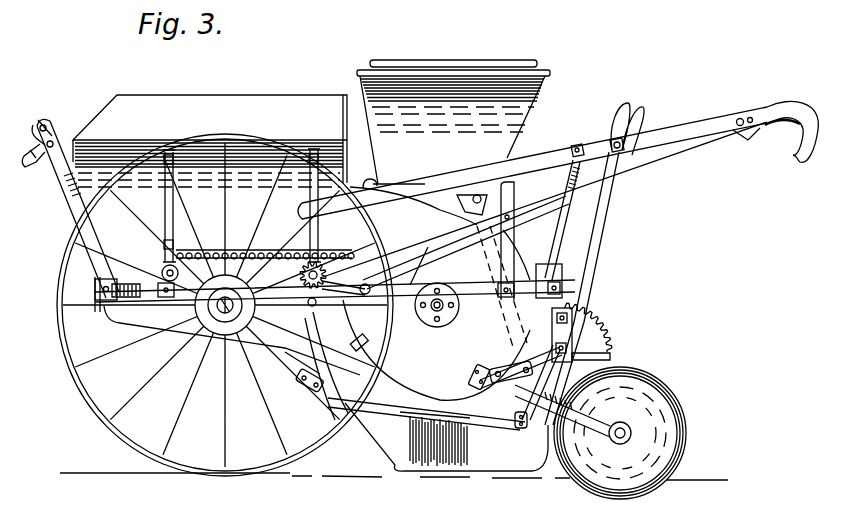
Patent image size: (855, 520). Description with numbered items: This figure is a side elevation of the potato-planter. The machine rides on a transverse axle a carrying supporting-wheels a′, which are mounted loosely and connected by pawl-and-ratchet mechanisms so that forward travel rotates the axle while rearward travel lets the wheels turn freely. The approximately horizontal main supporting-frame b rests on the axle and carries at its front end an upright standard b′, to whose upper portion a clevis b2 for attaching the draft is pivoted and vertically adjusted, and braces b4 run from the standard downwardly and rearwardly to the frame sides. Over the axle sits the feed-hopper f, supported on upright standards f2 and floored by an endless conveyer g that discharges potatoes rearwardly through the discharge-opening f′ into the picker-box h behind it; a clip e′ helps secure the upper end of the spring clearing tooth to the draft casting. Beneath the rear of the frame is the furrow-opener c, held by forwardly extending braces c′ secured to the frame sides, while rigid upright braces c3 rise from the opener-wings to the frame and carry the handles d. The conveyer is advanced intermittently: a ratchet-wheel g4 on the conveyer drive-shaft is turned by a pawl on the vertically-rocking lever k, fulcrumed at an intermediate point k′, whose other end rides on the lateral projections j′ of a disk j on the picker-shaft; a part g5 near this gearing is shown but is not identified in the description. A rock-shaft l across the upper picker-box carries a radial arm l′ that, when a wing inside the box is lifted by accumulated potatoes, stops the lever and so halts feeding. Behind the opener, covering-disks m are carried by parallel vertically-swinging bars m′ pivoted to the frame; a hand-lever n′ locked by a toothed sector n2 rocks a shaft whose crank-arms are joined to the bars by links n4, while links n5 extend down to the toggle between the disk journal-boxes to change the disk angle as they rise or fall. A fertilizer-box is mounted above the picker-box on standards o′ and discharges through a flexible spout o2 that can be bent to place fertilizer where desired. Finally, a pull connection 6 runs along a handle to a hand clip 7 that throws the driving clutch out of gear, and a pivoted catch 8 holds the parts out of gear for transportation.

The transverse axle a is at (206, 350).
The supporting-wheels a′ is at (92, 403).
The main supporting-frame b is at (477, 286).
The upright standard b′ is at (42, 121).
The clevis b2 is at (30, 168).
The braces b4 is at (68, 214).
The furrow-opener c is at (438, 434).
The opener braces c′ is at (322, 372).
The upright braces c3 is at (565, 157).
The handles d is at (693, 124).
The clip e′ is at (138, 318).
The feed-hopper f is at (210, 141).
The discharge-opening f′ is at (310, 183).
The hopper standards f2 is at (170, 224).
The endless conveyer g is at (243, 249).
The ratchet-wheel g4 is at (308, 298).
The sprocket g5 is at (300, 273).
The picker-box h is at (436, 293).
The disk j is at (425, 323).
The lateral projections j′ is at (452, 320).
The vertically-rocking lever k is at (422, 257).
The fulcrum point k′ is at (360, 342).
The rock-shaft l is at (358, 195).
The radial stop-arm l′ is at (374, 230).
The covering-disks m is at (620, 433).
The disk-carrying bars m′ is at (462, 414).
The hand-lever n′ is at (600, 217).
The toothed sector n2 is at (612, 353).
The links n4 is at (512, 394).
The links n5 is at (566, 358).
The fertilizer-box standards o′ is at (509, 246).
The discharge spout o2 is at (505, 351).
The pull connection 6 is at (690, 162).
The hand clip 7 is at (787, 131).
The pivoted catch 8 is at (753, 138).